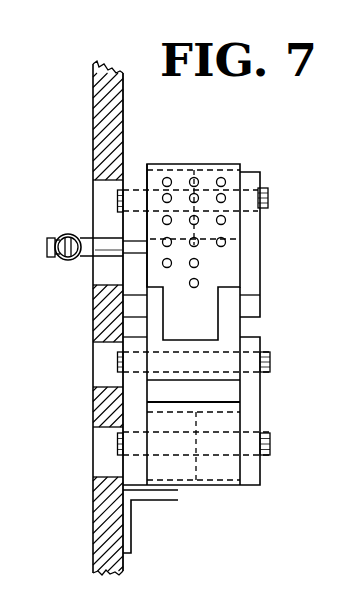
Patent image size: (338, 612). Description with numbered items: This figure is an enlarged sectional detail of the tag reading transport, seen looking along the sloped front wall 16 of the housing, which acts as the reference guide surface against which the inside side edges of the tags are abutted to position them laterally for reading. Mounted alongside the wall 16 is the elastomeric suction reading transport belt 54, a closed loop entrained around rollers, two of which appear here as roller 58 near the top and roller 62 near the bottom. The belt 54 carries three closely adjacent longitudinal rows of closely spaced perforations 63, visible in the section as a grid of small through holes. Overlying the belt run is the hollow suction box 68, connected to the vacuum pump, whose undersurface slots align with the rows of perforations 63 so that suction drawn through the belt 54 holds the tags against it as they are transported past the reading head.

The front wall 16 is at (100, 87).
The suction reading transport belt 54 is at (193, 164).
The roller 58 is at (240, 172).
The roller 62 is at (236, 488).
The perforations 63 is at (198, 283).
The suction box 68 is at (262, 395).